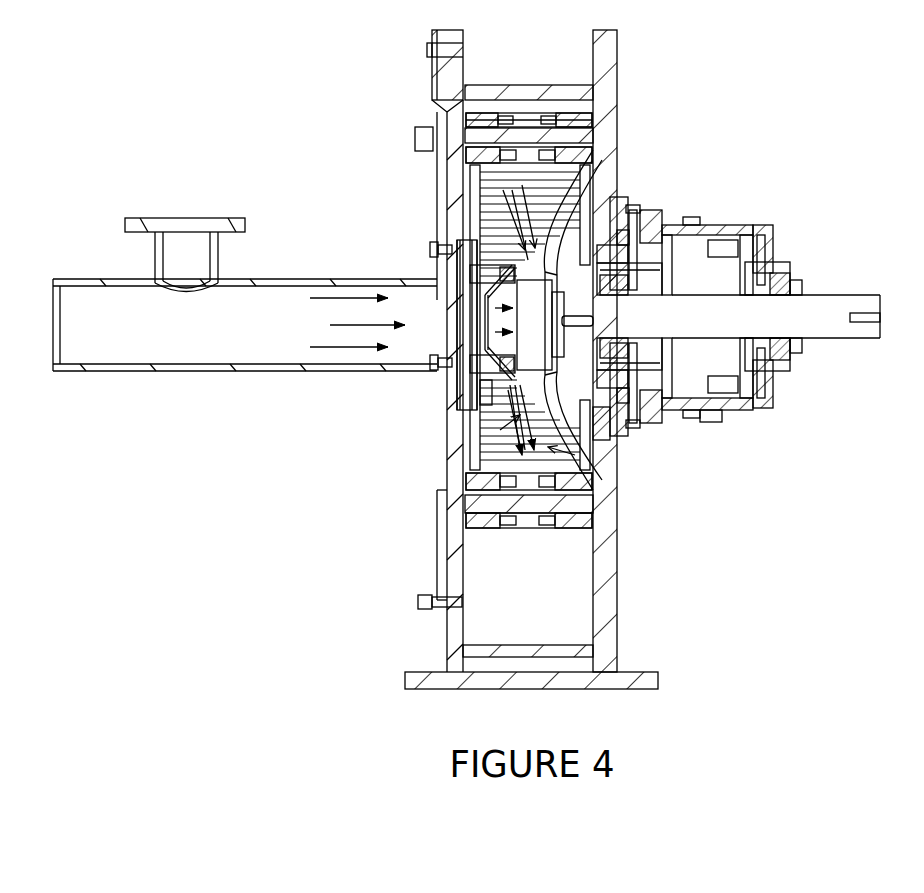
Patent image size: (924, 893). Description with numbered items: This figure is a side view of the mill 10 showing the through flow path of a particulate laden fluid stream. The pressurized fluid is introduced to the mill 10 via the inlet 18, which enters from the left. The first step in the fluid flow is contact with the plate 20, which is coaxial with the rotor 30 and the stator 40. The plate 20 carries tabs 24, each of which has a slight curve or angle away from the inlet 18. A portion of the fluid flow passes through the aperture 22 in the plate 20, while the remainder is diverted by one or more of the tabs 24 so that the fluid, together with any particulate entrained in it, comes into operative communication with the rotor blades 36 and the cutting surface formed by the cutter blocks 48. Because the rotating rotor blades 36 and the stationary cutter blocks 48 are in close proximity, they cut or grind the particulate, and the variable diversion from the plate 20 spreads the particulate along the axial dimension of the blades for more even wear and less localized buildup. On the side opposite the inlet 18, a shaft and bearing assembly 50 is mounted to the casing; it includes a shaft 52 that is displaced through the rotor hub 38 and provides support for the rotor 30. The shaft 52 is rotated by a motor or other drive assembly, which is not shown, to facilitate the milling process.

The mill 10 is at (620, 600).
The inlet 18 is at (310, 370).
The plate 20 is at (470, 372).
The aperture 22 is at (487, 305).
The tabs 24 is at (500, 425).
The rotor 30 is at (600, 177).
The rotor blades 36 is at (588, 462).
The rotor hub 38 is at (586, 226).
The stator 40 is at (605, 125).
The cutter blocks 48 is at (585, 518).
The shaft and bearing assembly 50 is at (740, 413).
The shaft 52 is at (835, 294).